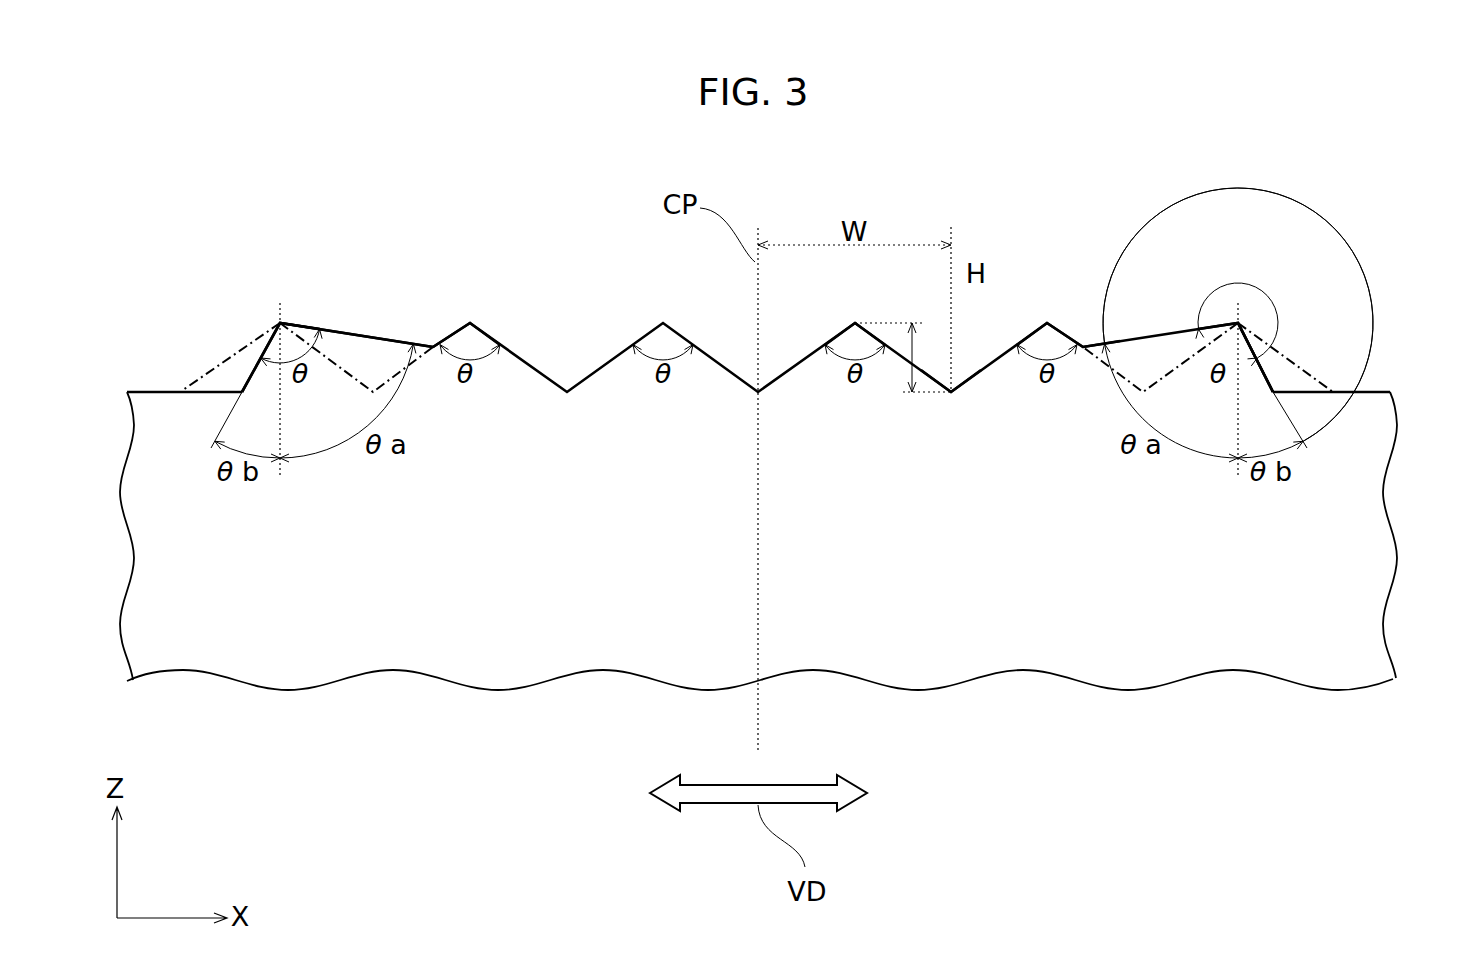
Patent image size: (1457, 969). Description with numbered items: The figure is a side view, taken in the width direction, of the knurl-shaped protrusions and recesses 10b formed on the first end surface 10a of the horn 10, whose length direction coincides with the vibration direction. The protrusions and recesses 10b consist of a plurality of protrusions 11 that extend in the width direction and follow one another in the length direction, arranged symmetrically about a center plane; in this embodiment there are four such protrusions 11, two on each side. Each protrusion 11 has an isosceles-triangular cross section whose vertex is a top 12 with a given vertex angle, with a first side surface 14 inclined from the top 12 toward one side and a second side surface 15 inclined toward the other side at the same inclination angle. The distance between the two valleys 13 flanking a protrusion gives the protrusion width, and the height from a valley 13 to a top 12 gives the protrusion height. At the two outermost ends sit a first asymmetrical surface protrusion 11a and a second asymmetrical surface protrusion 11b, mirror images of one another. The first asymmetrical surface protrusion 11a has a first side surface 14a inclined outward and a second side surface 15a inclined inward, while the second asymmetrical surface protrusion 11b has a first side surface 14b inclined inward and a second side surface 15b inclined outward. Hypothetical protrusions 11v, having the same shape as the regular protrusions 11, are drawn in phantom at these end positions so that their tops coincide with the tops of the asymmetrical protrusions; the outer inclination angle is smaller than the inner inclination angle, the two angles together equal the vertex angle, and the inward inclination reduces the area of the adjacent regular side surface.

The horn 10 is at (1182, 635).
The first end surface 10a is at (1362, 392).
The protrusions and recesses 10b is at (752, 302).
The protrusion 11 is at (1060, 347).
The first asymmetrical surface protrusion 11a is at (332, 352).
The second asymmetrical surface protrusion 11b is at (1210, 330).
The hypothetical protrusion 11v is at (1298, 362).
The top 12 is at (855, 322).
The valley 13 is at (957, 373).
The first side surface 14 is at (445, 327).
The first side surface 14a is at (250, 365).
The first side surface 14b is at (1147, 332).
The second side surface 15 is at (1087, 347).
The second side surface 15a is at (385, 337).
The second side surface 15b is at (1297, 377).